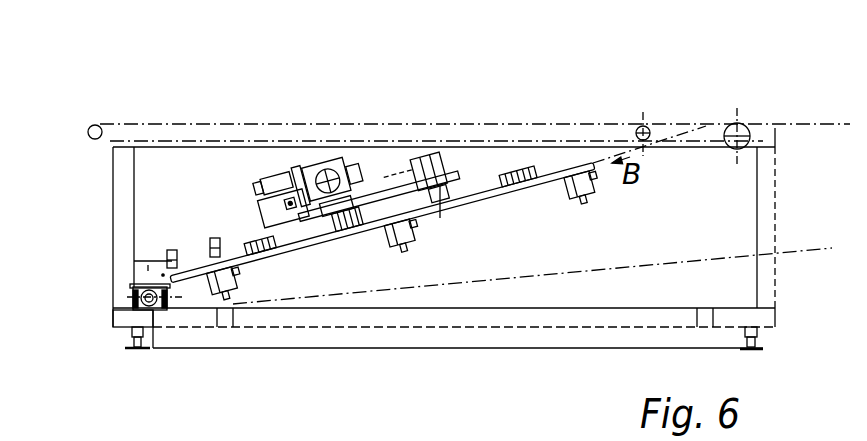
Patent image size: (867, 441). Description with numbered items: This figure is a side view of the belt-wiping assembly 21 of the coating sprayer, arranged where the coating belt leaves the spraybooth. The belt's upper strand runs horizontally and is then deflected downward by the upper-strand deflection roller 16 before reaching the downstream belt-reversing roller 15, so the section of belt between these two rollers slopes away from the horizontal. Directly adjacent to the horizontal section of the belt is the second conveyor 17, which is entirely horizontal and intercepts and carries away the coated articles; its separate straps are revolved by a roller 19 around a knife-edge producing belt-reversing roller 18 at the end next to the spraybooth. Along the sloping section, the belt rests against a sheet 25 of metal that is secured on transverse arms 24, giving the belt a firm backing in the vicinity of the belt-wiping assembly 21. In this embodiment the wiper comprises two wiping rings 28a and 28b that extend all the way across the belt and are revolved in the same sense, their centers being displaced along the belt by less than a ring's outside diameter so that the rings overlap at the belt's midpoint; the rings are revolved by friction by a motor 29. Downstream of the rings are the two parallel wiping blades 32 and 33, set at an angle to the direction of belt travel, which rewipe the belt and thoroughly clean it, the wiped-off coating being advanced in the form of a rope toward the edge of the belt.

The downstream belt-reversing roller 15 is at (128, 308).
The upper-strand deflection roller 16 is at (742, 123).
The second conveyor 17 is at (320, 124).
The knife-edge producing belt-reversing roller 18 is at (703, 128).
The roller 19 is at (94, 125).
The belt-wiping assembly 21 is at (380, 184).
The transverse arms 24 is at (387, 224).
The sheet of metal 25 is at (360, 232).
The wiping ring 28a is at (510, 172).
The wiping ring 28b is at (245, 237).
The motor 29 is at (304, 163).
The wiping blade 32 is at (210, 250).
The wiping blade 33 is at (133, 286).